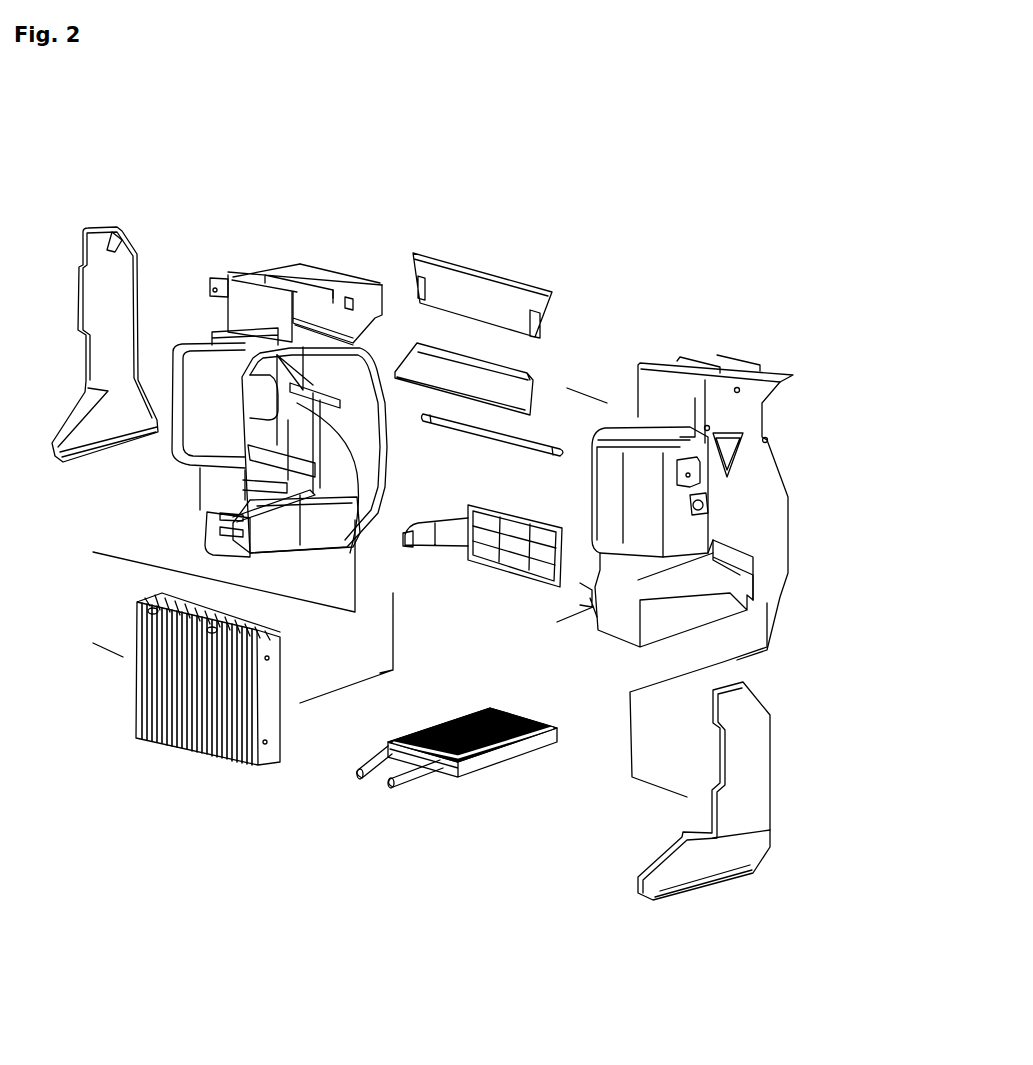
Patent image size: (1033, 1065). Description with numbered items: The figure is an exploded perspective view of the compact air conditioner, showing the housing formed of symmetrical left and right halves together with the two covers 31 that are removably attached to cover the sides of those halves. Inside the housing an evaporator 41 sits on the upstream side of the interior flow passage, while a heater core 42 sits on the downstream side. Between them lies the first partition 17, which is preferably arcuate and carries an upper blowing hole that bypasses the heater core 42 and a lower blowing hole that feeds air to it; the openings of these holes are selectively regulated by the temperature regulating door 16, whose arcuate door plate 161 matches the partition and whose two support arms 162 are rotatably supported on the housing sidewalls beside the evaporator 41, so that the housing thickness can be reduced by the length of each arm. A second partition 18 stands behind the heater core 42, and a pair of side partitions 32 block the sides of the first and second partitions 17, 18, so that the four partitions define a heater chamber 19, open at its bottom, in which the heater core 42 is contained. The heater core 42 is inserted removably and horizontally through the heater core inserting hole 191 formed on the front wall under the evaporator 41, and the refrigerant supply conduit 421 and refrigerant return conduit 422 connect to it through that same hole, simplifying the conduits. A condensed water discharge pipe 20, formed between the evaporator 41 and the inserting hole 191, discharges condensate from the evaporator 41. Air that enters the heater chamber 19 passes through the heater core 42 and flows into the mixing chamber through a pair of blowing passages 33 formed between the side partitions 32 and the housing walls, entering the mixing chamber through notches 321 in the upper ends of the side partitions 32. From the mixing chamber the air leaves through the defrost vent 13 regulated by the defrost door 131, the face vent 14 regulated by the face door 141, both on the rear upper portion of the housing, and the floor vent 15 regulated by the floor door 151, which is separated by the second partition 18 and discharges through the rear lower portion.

The defrost vent 13 is at (257, 272).
The face vent 14 is at (327, 277).
The face door 141 is at (477, 283).
The floor vent 15 is at (368, 435).
The floor door 151 is at (523, 373).
The defrost door 131 is at (515, 457).
The temperature regulating door 16 is at (480, 595).
The door plate 161 is at (510, 565).
The support arms 162 is at (420, 543).
The first partition 17 is at (305, 483).
The second partition 18 is at (367, 457).
The heater chamber 19 is at (340, 473).
The condensed water discharge pipe 20 is at (240, 517).
The heater core inserting hole 191 is at (223, 537).
The covers 31 is at (92, 305).
The side partitions 32 is at (714, 507).
The notches 321 is at (743, 453).
The blowing passages 33 is at (730, 563).
The evaporator 41 is at (183, 755).
The heater core 42 is at (444, 781).
The refrigerant supply conduit 421 is at (367, 778).
The refrigerant return conduit 422 is at (418, 778).